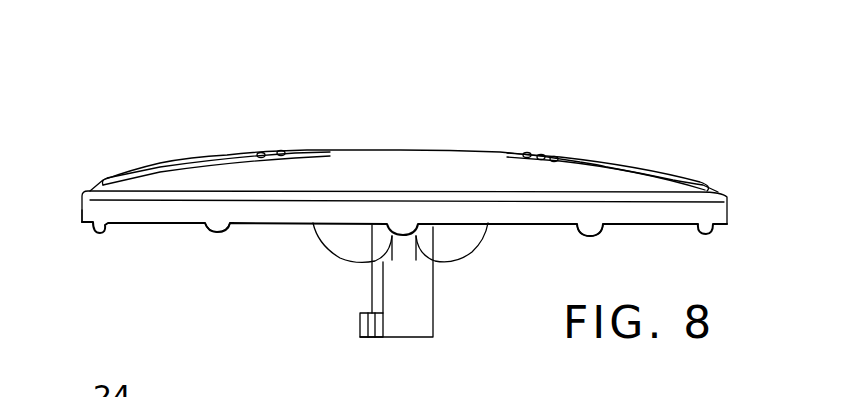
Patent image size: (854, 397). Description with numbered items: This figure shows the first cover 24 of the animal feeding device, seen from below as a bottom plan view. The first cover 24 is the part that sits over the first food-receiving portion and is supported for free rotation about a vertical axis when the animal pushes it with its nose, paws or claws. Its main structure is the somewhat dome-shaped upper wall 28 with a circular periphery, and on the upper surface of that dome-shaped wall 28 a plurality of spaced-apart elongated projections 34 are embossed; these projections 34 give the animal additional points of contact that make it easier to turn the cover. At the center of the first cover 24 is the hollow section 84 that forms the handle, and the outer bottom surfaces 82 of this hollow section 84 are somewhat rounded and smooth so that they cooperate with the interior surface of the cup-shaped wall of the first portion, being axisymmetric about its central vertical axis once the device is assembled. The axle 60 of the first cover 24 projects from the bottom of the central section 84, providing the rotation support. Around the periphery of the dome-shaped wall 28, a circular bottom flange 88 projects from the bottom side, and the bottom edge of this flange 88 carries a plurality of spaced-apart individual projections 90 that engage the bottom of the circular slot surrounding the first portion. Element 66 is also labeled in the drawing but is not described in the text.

The first cover 24 is at (170, 80).
The dome-shaped upper wall 28 is at (610, 178).
The elongated projections 34 is at (197, 157).
The axle 60 is at (423, 297).
The tip 66 is at (360, 330).
The outer bottom surfaces 82 is at (337, 243).
The hollow section 84 is at (336, 265).
The circular bottom flange 88 is at (147, 212).
The individual projections 90 is at (217, 230).